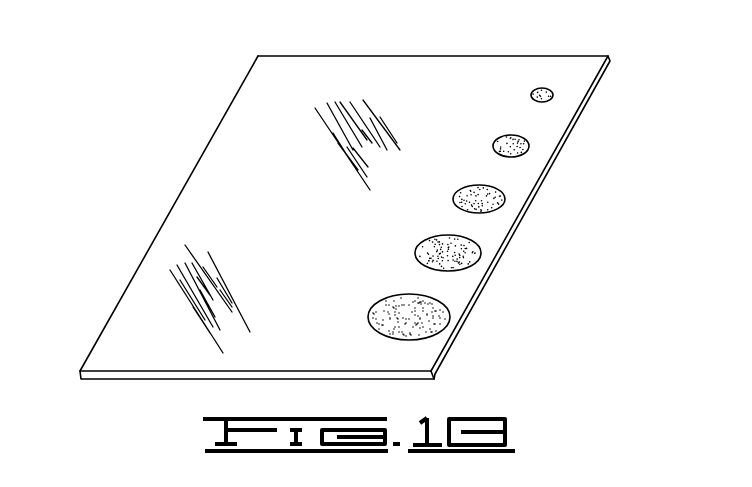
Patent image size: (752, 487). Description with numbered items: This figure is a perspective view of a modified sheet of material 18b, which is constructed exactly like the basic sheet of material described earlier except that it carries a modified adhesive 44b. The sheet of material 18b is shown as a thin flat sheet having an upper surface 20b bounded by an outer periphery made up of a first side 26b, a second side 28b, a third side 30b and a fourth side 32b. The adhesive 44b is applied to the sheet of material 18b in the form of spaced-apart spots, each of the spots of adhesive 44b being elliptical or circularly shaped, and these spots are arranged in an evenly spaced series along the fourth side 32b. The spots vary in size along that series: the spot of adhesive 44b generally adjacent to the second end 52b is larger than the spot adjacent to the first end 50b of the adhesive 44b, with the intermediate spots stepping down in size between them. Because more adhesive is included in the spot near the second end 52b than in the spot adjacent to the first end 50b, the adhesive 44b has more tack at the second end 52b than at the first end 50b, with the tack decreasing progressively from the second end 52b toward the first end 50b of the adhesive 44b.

The sheet of material 18b is at (353, 211).
The upper surface 20b is at (353, 218).
The first side 26b is at (386, 56).
The second side 28b is at (123, 372).
The third side 30b is at (212, 135).
The fourth side 32b is at (584, 107).
The adhesive 44b is at (474, 191).
The first end 50b is at (543, 82).
The second end 52b is at (438, 336).